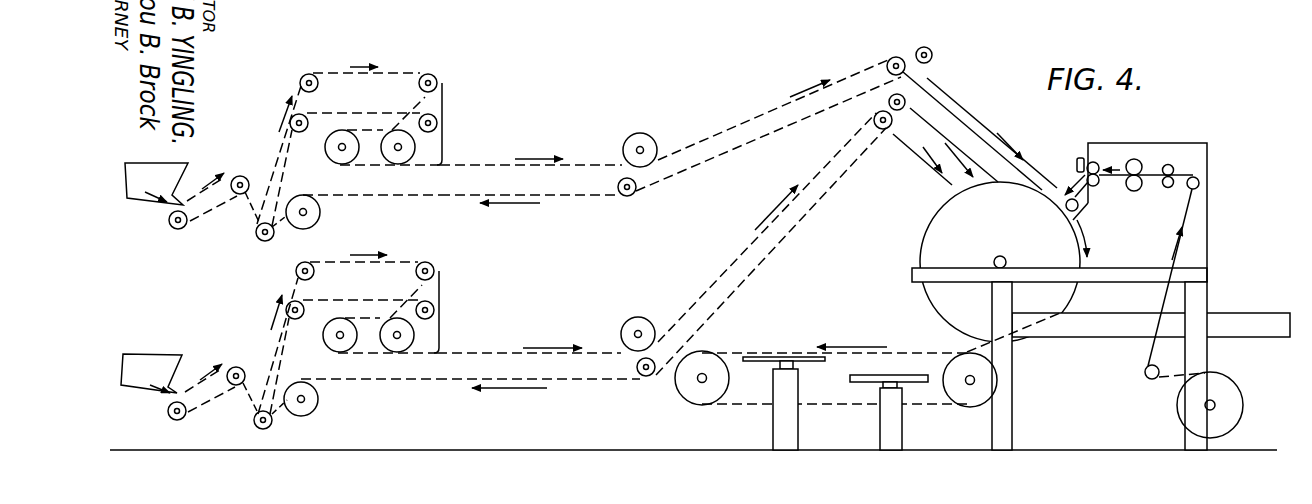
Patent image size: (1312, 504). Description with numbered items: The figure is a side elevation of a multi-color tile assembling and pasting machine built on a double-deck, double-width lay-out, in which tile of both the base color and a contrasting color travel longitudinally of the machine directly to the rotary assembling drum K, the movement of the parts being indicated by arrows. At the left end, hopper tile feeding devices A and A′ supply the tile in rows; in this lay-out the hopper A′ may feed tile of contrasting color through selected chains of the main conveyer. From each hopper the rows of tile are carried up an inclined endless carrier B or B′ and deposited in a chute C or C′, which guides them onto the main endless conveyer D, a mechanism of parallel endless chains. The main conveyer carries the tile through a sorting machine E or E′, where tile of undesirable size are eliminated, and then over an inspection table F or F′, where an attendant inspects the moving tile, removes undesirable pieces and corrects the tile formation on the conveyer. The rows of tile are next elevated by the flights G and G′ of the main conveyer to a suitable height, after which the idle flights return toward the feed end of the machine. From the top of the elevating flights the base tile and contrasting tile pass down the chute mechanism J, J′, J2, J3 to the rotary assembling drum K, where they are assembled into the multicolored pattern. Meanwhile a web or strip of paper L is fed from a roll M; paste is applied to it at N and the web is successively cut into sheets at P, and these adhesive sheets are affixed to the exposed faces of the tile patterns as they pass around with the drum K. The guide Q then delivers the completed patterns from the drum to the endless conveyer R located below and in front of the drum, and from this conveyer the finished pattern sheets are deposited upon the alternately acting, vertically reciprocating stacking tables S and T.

The hopper tile feeding device A is at (151, 373).
The hopper tile feeding device A' is at (156, 184).
The inclined endless carrier B is at (206, 382).
The inclined endless carrier B' is at (209, 203).
The chute C is at (245, 406).
The chute C' is at (259, 197).
The main endless conveyer D is at (277, 356).
The sorting machine E is at (361, 321).
The sorting machine E' is at (349, 130).
The inspection table F is at (546, 352).
The inspection table F' is at (548, 166).
The flight of main conveyer G is at (780, 234).
The flight of main conveyer G' is at (784, 119).
The chute mechanism J is at (922, 180).
The chute mechanism J' is at (932, 154).
The chute mechanism J2 is at (937, 92).
The chute mechanism J3 is at (975, 122).
The rotary assembling drum K is at (932, 250).
The web or strip of paper L is at (1143, 357).
The roll M is at (1242, 390).
The paste applying point N is at (1098, 158).
The cutting point P is at (1080, 157).
The guide Q is at (1017, 345).
The endless conveyer R is at (915, 354).
The stacking table S is at (755, 355).
The stacking table T is at (889, 403).